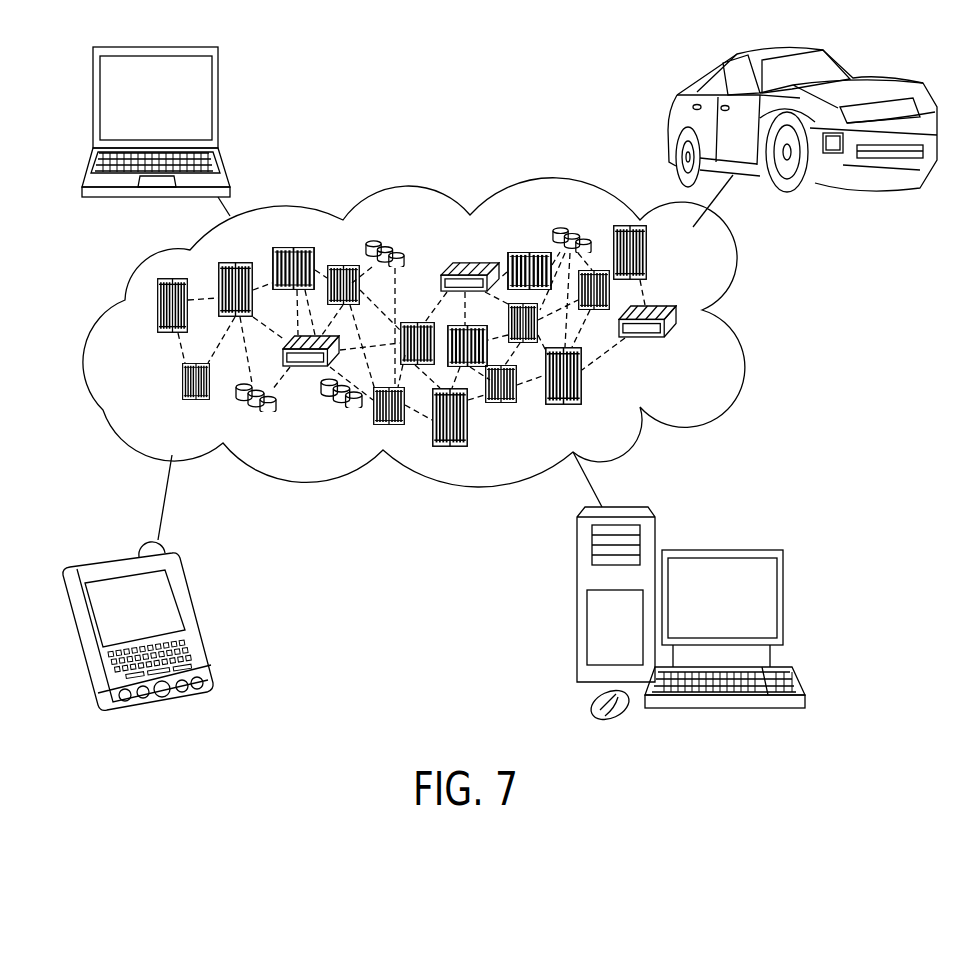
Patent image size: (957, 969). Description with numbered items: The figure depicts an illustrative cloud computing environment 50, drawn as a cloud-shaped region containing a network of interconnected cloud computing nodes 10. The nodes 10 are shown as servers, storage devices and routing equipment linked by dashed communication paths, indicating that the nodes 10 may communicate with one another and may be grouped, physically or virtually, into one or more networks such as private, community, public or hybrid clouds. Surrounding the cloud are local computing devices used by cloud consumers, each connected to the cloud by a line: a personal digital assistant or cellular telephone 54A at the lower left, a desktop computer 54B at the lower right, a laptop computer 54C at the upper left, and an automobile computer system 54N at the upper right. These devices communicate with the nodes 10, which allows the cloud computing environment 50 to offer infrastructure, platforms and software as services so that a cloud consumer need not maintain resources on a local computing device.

The cloud computing nodes 10 is at (690, 358).
The cloud computing environment 50 is at (741, 262).
The personal digital assistant or cellular telephone 54A is at (187, 598).
The desktop computer 54B is at (783, 597).
The laptop computer 54C is at (218, 102).
The automobile computer system 54N is at (853, 70).